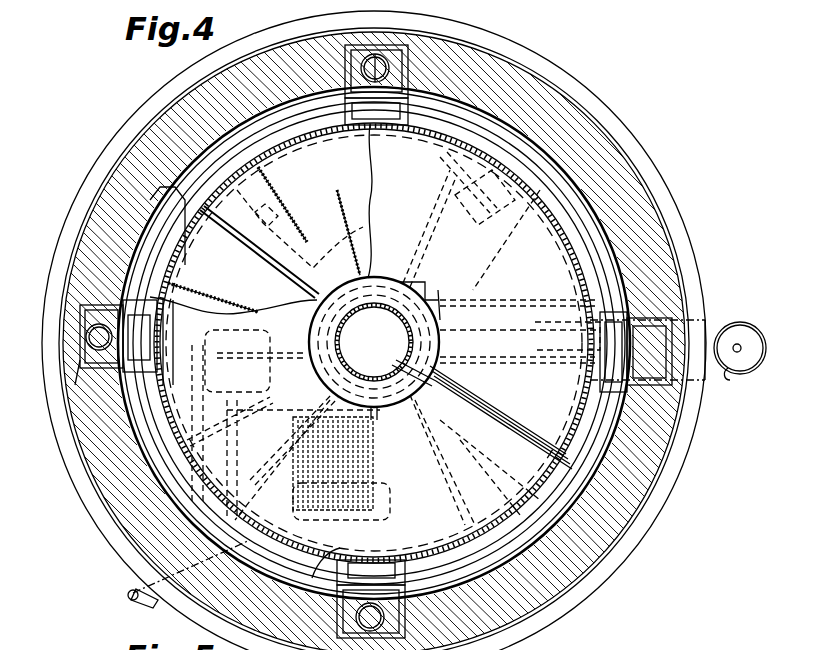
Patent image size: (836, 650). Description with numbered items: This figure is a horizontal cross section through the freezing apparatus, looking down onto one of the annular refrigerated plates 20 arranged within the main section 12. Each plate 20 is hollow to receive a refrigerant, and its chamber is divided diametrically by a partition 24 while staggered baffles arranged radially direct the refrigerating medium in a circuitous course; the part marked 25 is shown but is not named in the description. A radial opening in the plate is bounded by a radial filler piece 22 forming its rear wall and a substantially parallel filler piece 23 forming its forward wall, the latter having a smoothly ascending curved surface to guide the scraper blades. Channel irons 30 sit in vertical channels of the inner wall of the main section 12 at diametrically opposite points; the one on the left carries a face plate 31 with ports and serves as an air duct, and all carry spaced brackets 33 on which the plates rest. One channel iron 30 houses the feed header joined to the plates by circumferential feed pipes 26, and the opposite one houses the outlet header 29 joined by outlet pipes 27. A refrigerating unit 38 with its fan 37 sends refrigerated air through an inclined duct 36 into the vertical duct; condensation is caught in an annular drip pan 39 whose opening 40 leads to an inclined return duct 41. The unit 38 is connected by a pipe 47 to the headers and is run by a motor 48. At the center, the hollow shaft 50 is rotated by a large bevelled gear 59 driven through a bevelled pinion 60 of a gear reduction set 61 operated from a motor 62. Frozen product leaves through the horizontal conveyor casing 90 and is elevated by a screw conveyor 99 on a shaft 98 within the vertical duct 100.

The main section 12 is at (78, 467).
The refrigerated plate 20 is at (512, 198).
The radial filler piece 22 is at (458, 470).
The filler piece 23 is at (500, 412).
The partition 24 is at (235, 232).
The blades 25 is at (292, 214).
The feed pipes 26 is at (331, 554).
The outlet pipes 27 is at (512, 140).
The outlet header 29 is at (378, 60).
The channel iron 30 is at (345, 94).
The face plate 31 is at (170, 250).
The brackets 33 is at (350, 112).
The inclined duct 36 is at (197, 352).
The fan 37 is at (285, 450).
The refrigerating unit 38 is at (296, 418).
The annular drip pan 39 is at (316, 362).
The opening 40 is at (426, 380).
The inclined return duct 41 is at (412, 440).
The pipe 47 is at (128, 590).
The motor 48 is at (308, 306).
The shaft 50 is at (374, 306).
The bevelled gear 59 is at (342, 295).
The bevelled pinion 60 is at (418, 286).
The gear reduction set 61 is at (498, 256).
The motor 62 is at (292, 134).
The casing 90 is at (712, 343).
The shaft 98 is at (740, 350).
The screw conveyor 99 is at (735, 372).
The vertical duct 100 is at (740, 322).